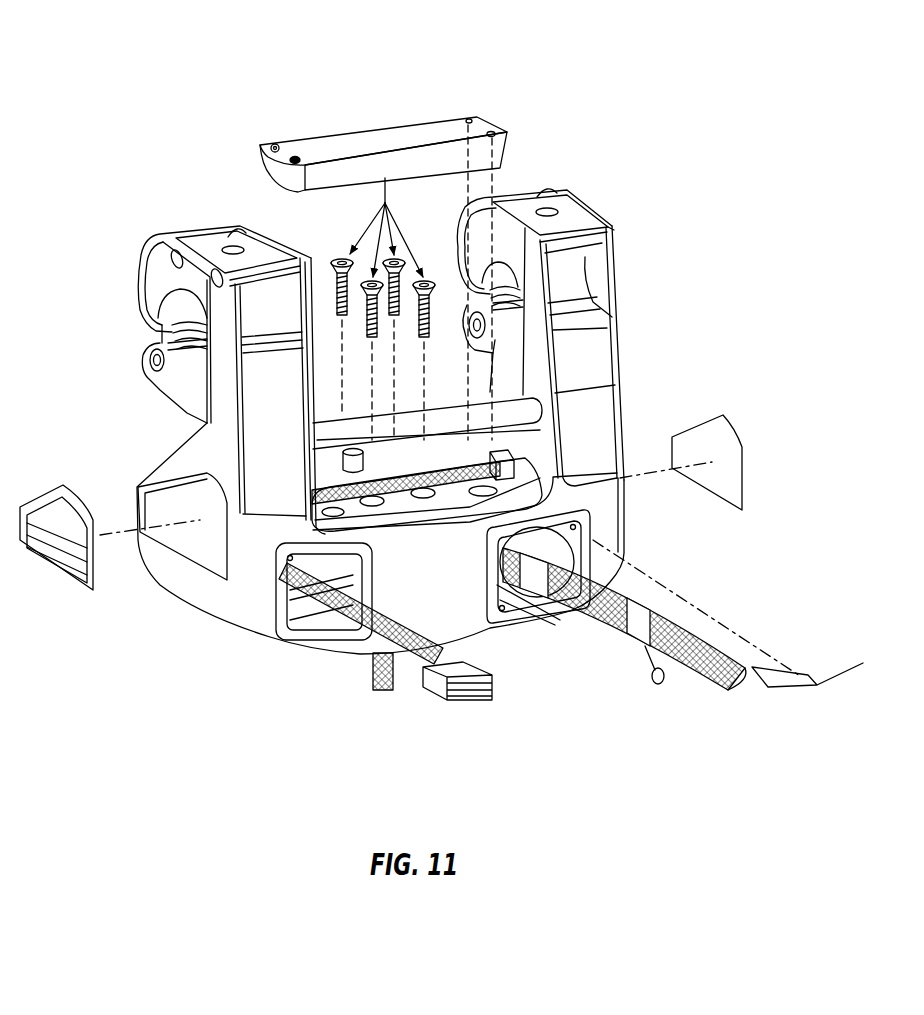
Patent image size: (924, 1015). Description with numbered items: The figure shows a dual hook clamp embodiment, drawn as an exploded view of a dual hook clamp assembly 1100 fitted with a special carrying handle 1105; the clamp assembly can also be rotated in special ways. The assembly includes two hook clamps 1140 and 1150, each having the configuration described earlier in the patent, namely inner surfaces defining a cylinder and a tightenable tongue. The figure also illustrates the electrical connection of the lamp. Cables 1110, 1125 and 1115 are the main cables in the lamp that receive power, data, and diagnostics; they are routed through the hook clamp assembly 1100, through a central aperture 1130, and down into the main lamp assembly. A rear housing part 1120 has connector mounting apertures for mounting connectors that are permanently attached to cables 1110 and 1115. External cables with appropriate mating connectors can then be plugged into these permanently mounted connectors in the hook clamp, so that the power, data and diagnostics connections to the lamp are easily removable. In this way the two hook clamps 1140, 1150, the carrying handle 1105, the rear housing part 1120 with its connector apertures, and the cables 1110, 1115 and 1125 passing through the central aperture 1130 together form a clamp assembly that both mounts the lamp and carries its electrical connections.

The dual hook clamp assembly 1100 is at (441, 375).
The carrying handle 1105 is at (520, 423).
The cable 1110 is at (427, 660).
The cable 1115 is at (710, 682).
The rear housing part 1120 is at (300, 647).
The cable 1125 is at (317, 503).
The central aperture 1130 is at (423, 503).
The hook clamp 1140 is at (277, 385).
The hook clamp 1150 is at (590, 350).